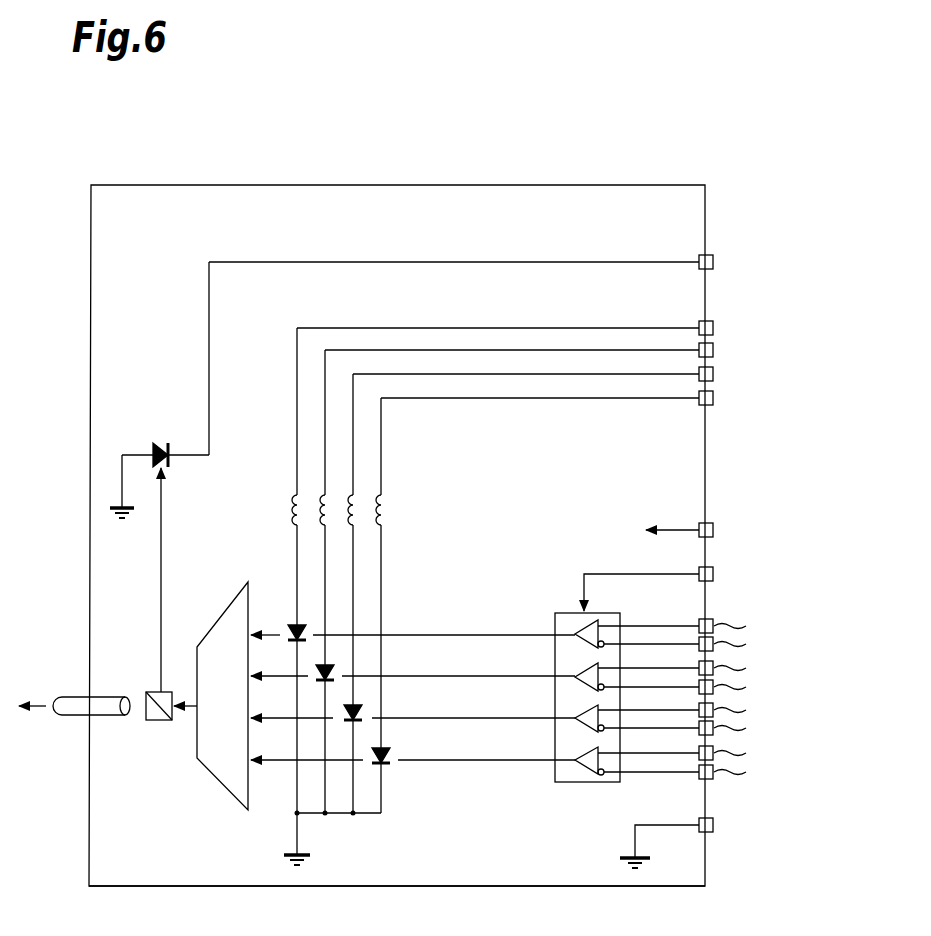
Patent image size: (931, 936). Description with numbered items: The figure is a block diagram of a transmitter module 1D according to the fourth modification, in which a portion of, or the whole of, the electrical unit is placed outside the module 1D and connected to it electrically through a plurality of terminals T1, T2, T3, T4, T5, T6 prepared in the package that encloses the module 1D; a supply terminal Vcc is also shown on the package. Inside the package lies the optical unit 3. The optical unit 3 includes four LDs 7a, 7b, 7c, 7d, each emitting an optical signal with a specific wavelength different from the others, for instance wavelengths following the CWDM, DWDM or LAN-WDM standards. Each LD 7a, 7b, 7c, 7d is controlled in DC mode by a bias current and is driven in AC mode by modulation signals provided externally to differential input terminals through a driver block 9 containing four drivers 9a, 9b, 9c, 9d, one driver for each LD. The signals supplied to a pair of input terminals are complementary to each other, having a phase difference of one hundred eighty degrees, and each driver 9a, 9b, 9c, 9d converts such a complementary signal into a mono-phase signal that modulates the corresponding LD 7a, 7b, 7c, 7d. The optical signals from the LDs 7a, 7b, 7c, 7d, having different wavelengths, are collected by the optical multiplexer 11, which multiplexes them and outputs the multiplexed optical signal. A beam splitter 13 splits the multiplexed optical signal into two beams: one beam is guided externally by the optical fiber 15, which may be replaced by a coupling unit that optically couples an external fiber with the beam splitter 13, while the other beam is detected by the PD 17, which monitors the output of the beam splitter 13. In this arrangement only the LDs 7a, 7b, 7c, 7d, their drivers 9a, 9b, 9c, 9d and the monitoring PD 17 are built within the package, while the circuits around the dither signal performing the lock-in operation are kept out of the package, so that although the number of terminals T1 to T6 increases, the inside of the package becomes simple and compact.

The transmitter module 1D is at (633, 180).
The optical unit 3 is at (267, 846).
The LD 7a is at (296, 622).
The LD 7b is at (333, 682).
The LD 7c is at (358, 722).
The LD 7d is at (386, 768).
The driver circuit 9 is at (587, 697).
The driver 9a is at (574, 628).
The driver 9b is at (574, 670).
The driver 9c is at (574, 714).
The driver 9d is at (574, 755).
The optical multiplexer 11 is at (226, 612).
The beam splitter 13 is at (158, 722).
The optical fiber 15 is at (115, 696).
The PD 17 is at (157, 448).
The terminal T1 is at (714, 262).
The terminal T2 is at (714, 328).
The terminal T3 is at (714, 350).
The terminal T4 is at (714, 374).
The terminal T5 is at (714, 398).
The terminal T6 is at (714, 574).
The power supply terminal Vcc is at (714, 530).